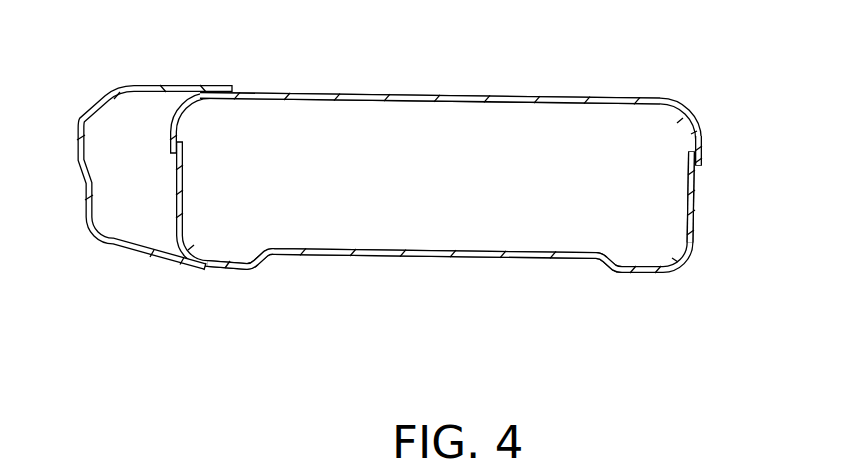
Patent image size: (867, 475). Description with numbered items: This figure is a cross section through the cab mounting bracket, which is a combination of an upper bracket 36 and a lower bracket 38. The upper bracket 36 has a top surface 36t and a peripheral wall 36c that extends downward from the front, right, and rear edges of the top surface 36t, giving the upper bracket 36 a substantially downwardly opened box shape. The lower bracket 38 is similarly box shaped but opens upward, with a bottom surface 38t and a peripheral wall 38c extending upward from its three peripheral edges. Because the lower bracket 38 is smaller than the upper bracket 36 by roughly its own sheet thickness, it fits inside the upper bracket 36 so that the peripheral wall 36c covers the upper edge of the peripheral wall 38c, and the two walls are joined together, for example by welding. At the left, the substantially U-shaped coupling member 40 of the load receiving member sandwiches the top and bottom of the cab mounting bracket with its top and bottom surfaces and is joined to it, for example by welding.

The upper bracket 36 is at (480, 92).
The top surface 36t is at (605, 97).
The peripheral wall 36c is at (703, 152).
The lower bracket 38 is at (483, 256).
The bottom wall of lower case member 38t is at (620, 277).
The peripheral wall 38c is at (695, 210).
The coupling member 40 is at (100, 101).